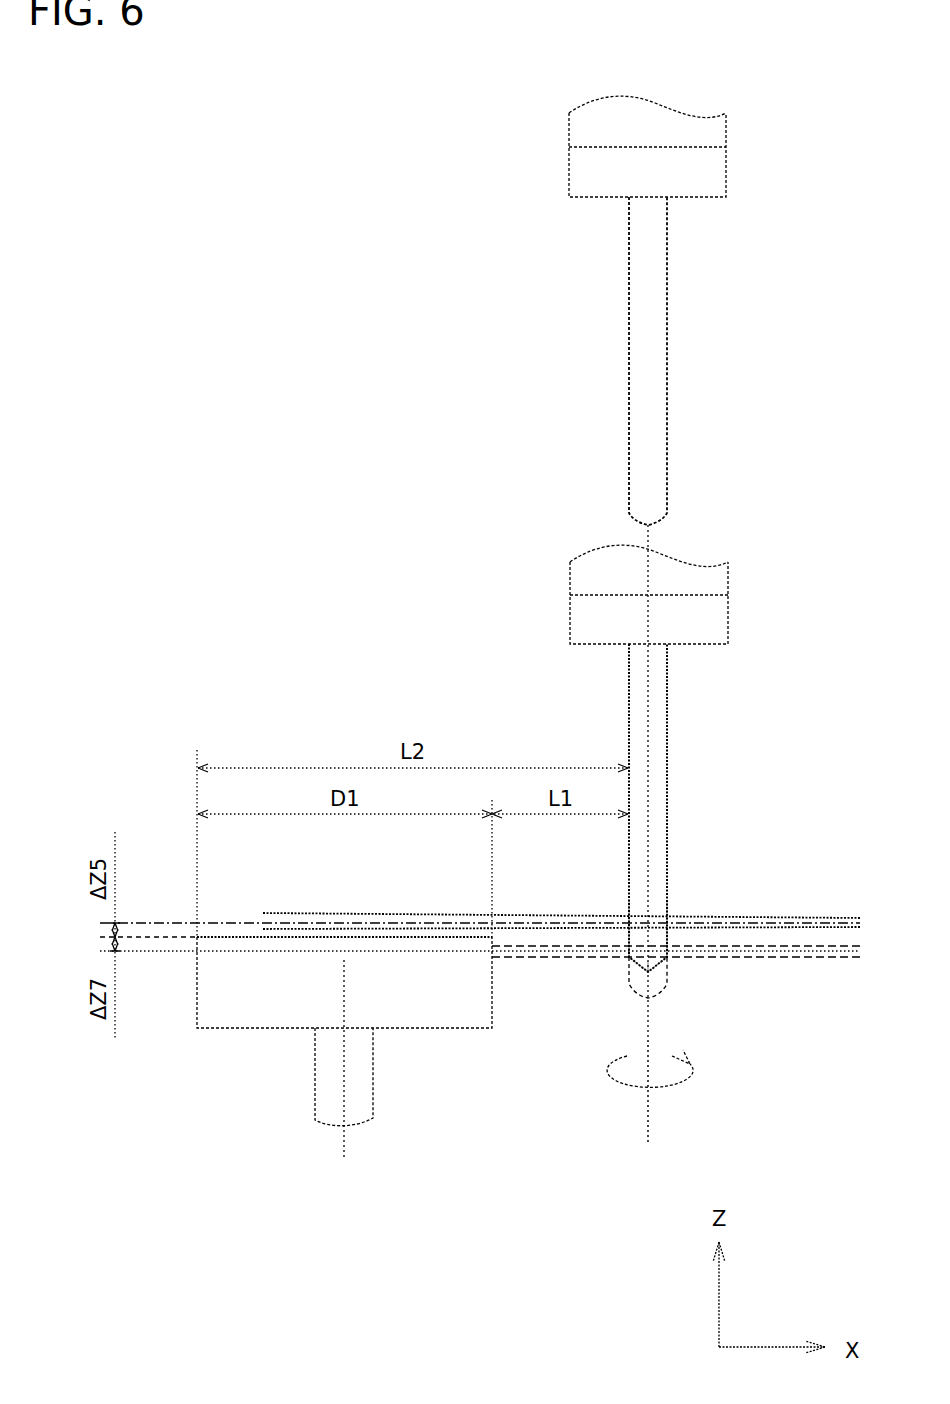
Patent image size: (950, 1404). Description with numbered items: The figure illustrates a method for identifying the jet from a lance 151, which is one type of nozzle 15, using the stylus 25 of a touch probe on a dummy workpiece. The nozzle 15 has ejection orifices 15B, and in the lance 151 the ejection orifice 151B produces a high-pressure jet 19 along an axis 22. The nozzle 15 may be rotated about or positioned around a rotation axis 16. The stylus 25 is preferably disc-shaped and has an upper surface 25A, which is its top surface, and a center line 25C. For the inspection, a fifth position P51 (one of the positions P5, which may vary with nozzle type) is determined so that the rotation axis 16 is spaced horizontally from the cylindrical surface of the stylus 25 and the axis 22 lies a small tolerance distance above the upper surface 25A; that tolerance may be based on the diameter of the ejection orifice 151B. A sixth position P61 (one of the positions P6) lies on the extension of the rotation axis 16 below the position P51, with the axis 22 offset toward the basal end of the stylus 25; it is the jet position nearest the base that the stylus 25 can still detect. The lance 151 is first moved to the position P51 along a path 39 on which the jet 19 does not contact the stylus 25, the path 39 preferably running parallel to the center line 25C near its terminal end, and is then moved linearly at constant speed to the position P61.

The path 39 is at (650, 542).
The nozzle 15 is at (726, 839).
The lance 151 is at (726, 839).
The ejection orifice 15B is at (726, 918).
The ejection orifice 151B is at (668, 918).
The position P5 is at (714, 983).
The position P51 is at (657, 968).
The position P6 is at (704, 996).
The position P61 is at (650, 999).
The high-pressure jet 19 is at (563, 918).
The axis 22 is at (165, 922).
The stylus 25 is at (338, 1013).
The upper surface 25A is at (248, 937).
The center line 25C is at (345, 1143).
The rotation axis 16 is at (650, 1110).